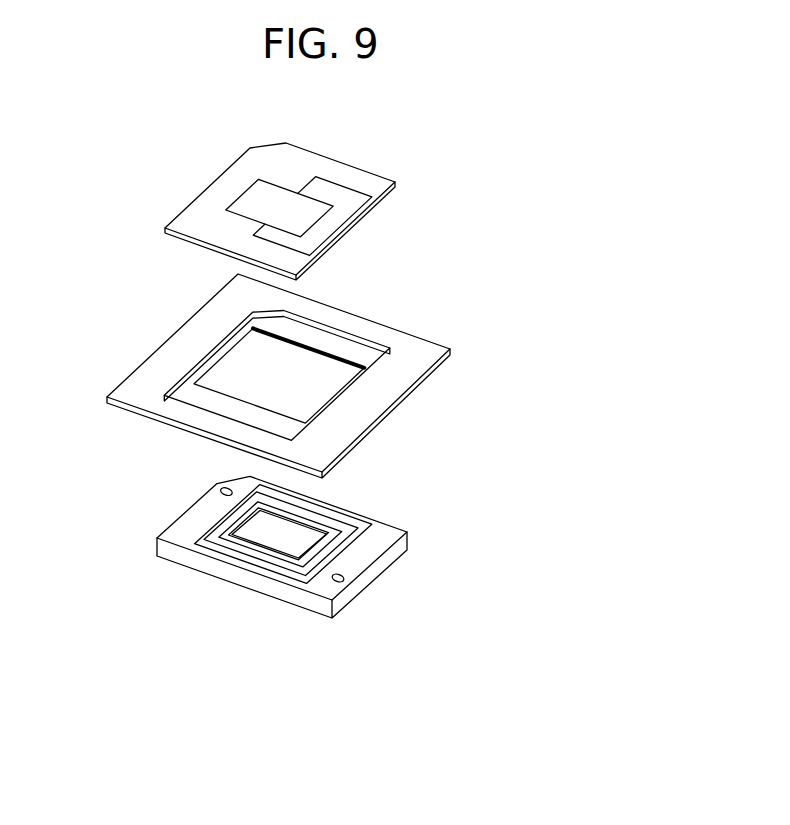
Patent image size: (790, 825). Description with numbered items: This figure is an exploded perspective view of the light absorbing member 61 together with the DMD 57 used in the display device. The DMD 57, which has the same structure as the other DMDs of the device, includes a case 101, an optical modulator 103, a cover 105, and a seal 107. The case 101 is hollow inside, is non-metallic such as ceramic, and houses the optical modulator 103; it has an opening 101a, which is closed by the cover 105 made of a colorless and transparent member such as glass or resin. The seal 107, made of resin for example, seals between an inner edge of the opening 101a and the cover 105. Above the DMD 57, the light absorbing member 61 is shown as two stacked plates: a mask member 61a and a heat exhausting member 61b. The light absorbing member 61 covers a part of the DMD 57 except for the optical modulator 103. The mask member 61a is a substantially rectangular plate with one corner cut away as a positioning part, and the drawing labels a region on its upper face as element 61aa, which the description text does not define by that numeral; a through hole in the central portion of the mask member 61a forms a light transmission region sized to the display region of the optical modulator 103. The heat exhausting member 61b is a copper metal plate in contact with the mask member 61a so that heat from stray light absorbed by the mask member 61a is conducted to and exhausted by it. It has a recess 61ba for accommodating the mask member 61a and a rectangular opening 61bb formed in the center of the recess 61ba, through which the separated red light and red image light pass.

The light absorbing member 61 is at (600, 203).
The mask member 61a is at (381, 211).
The electrode pattern 61aa is at (342, 212).
The heat exhausting member 61b is at (352, 376).
The recess 61ba is at (345, 353).
The opening 61bb is at (323, 387).
The DMD 57 is at (385, 533).
The case 101 is at (298, 577).
The opening 101a is at (337, 585).
The optical modulator 103 is at (243, 533).
The cover 105 is at (223, 527).
The seal 107 is at (257, 560).